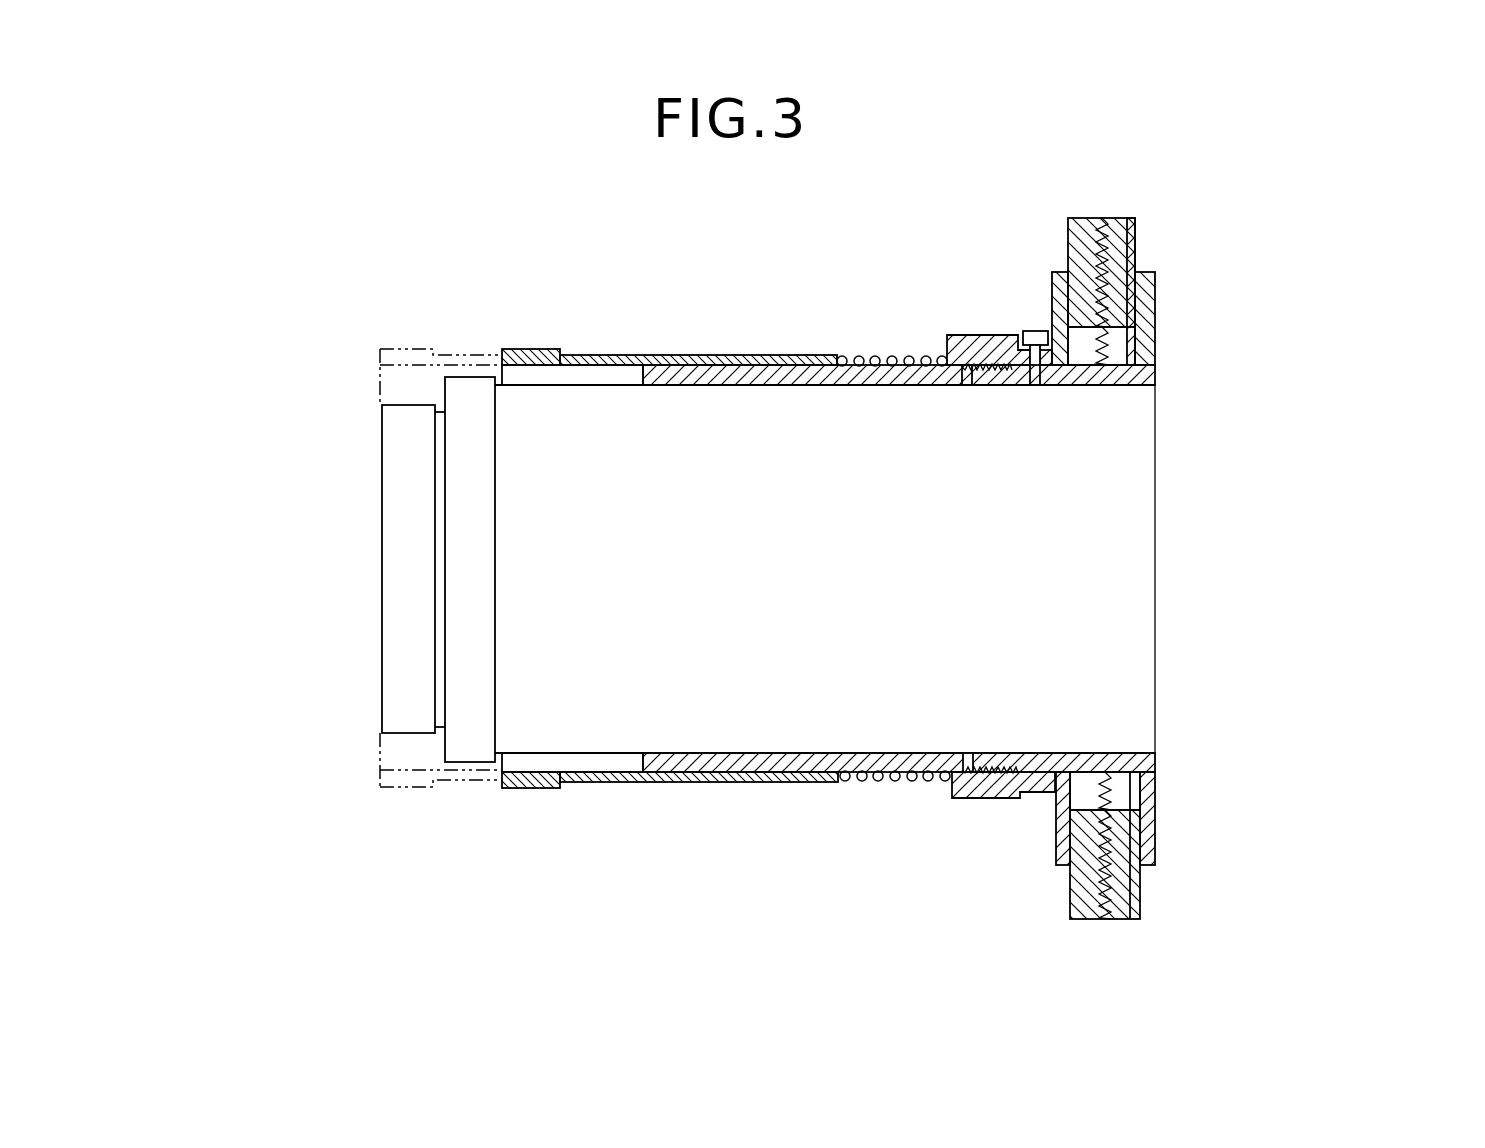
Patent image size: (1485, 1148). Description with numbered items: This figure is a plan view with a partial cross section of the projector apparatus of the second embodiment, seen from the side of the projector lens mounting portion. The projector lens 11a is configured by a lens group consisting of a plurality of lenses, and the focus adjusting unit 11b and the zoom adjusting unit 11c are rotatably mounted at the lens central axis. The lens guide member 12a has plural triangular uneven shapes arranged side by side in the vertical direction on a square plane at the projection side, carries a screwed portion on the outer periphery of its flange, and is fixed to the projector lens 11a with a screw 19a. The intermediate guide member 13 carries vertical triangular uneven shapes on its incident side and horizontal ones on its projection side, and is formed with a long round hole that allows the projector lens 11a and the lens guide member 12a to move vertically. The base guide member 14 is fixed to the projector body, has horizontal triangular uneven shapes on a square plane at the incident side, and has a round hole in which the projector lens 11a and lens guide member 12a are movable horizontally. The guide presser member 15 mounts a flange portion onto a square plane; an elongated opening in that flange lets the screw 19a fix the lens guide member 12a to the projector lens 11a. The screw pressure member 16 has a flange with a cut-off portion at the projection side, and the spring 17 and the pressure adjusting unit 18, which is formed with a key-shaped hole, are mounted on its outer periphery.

The projector lens 11a is at (565, 408).
The focus adjusting unit 11b is at (390, 465).
The zoom adjusting unit 11c is at (481, 748).
The lens guide member 12a is at (1148, 330).
The intermediate guide member 13 is at (1133, 228).
The base guide member 14 is at (1080, 228).
The guide presser member 15 is at (1058, 852).
The screw pressure member 16 is at (972, 795).
The spring 17 is at (853, 352).
The pressure adjusting unit 18 is at (666, 782).
The screw 19a is at (1030, 330).